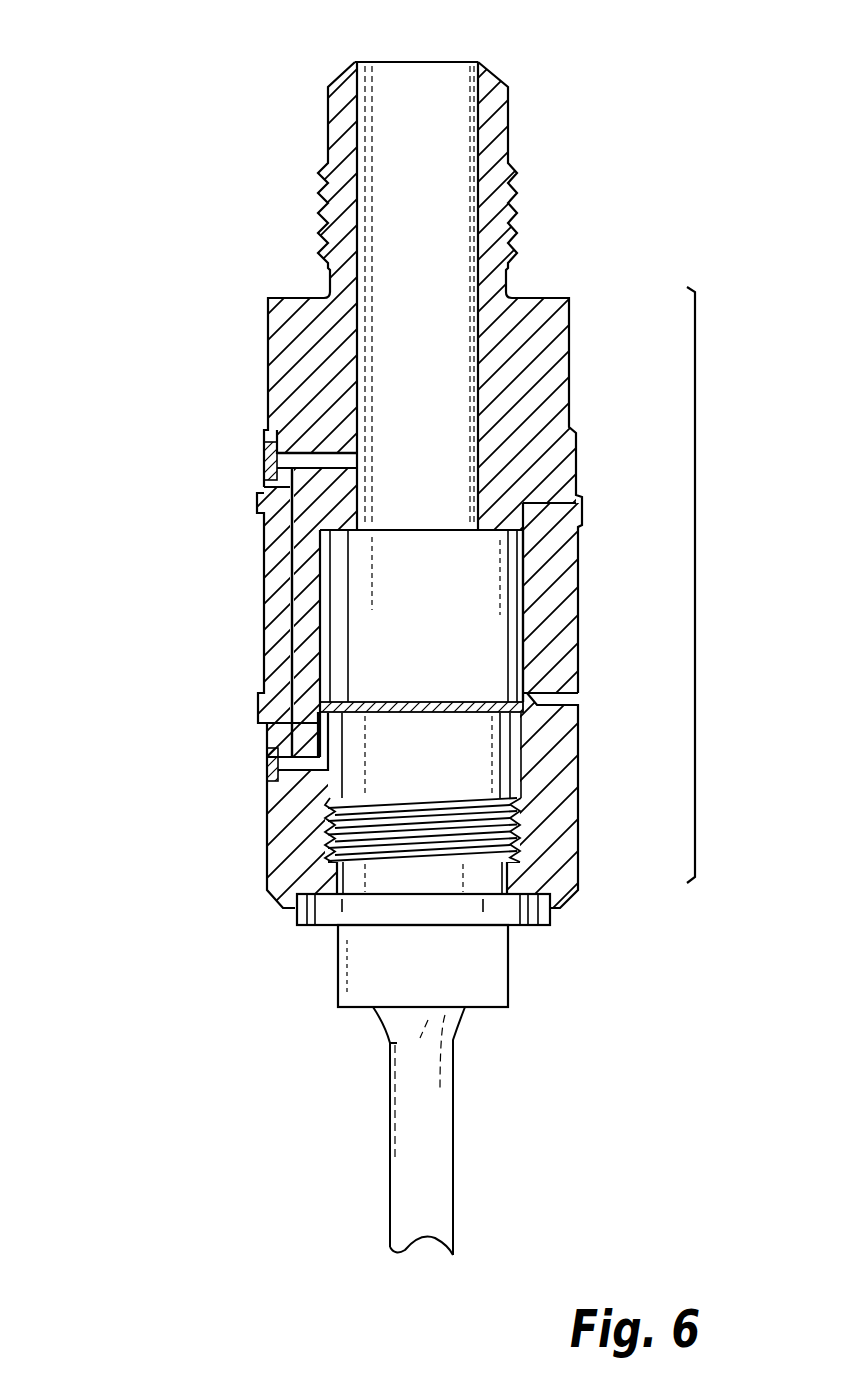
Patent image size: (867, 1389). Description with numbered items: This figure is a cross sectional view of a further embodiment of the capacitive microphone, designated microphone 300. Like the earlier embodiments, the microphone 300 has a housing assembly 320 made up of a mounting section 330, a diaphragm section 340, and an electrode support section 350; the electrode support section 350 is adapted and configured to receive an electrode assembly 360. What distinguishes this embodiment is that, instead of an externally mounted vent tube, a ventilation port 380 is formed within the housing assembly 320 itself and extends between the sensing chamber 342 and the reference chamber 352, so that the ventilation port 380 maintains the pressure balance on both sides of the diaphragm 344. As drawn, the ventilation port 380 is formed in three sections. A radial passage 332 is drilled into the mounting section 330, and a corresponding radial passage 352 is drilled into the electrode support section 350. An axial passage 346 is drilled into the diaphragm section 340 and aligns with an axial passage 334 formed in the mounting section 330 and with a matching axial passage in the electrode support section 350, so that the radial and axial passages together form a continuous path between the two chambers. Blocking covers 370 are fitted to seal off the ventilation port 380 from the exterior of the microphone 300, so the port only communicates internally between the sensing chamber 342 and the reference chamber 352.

The microphone 300 is at (148, 137).
The housing assembly 320 is at (707, 582).
The mounting section 330 is at (578, 370).
The radial passage 332 is at (318, 452).
The axial passage 334 is at (295, 488).
The diaphragm section 340 is at (592, 618).
The sensing chamber 342 is at (455, 597).
The diaphragm 344 is at (360, 700).
The axial passage 346 is at (290, 580).
The electrode support section 350 is at (597, 828).
The reference chamber 352 is at (475, 700).
The electrode assembly 360 is at (513, 972).
The blocking covers 370 is at (265, 463).
The ventilation port 380 is at (275, 725).